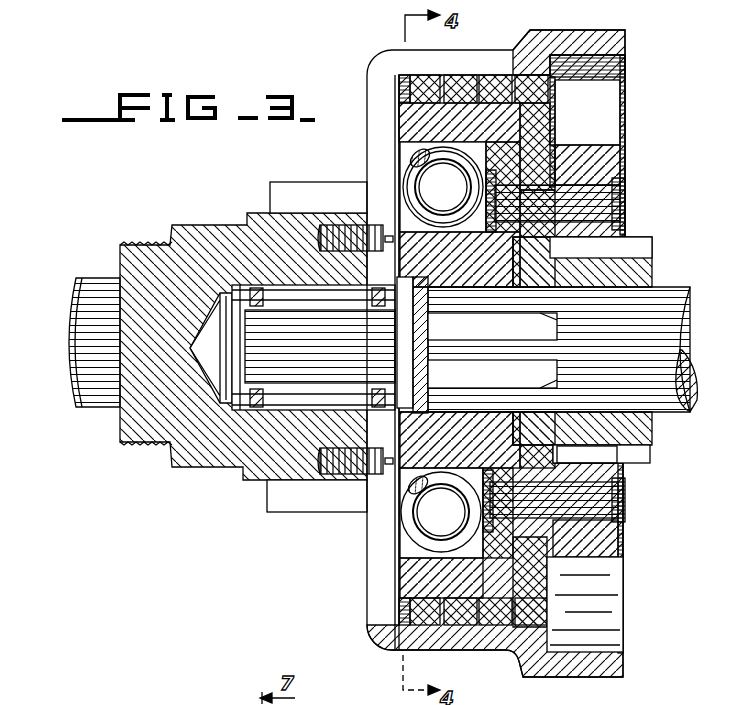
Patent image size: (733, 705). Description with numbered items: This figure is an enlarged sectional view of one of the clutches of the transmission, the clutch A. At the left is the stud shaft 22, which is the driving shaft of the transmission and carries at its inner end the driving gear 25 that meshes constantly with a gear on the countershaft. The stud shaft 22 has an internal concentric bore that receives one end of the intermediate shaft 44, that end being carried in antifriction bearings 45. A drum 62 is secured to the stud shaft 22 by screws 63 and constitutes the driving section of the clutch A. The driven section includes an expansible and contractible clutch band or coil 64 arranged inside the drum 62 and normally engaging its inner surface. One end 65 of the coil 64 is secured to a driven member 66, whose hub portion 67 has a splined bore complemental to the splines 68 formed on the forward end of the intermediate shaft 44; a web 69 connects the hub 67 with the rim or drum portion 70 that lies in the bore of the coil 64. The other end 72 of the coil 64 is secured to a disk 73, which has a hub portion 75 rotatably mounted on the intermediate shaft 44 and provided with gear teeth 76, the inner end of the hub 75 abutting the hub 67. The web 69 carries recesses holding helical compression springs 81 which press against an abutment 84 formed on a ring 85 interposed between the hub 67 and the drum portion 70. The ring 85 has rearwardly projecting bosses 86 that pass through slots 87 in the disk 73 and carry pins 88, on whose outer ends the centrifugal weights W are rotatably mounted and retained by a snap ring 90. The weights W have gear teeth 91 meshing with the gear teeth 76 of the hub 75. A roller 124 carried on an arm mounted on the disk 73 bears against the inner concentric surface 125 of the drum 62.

The stud shaft 22 is at (78, 349).
The driving gear 25 is at (286, 192).
The intermediate shaft 44 is at (668, 337).
The antifriction bearings 45 is at (307, 300).
The drum 62 is at (560, 38).
The screws 63 is at (333, 478).
The clutch coil 64 is at (460, 83).
The coil end 65 is at (413, 85).
The driven member 66 is at (407, 134).
The hub portion 67 is at (498, 272).
The splines 68 is at (472, 316).
The web 69 is at (405, 548).
The drum portion 70 is at (394, 127).
The coil end 72 is at (530, 85).
The disk 73 is at (544, 128).
The hub portion 75 is at (645, 275).
The gear teeth 76 is at (644, 242).
The helical compression springs 81 is at (408, 173).
The abutment 84 is at (410, 152).
The ring 85 is at (497, 155).
The bosses 86 is at (556, 166).
The slots 87 is at (546, 562).
The pins 88 is at (600, 200).
The snap ring 90 is at (622, 176).
The gear teeth 91 is at (587, 454).
The roller 124 is at (340, 700).
The inner concentric surface 125 is at (628, 62).
The centrifugal weights W is at (608, 93).
The clutch A is at (626, 112).